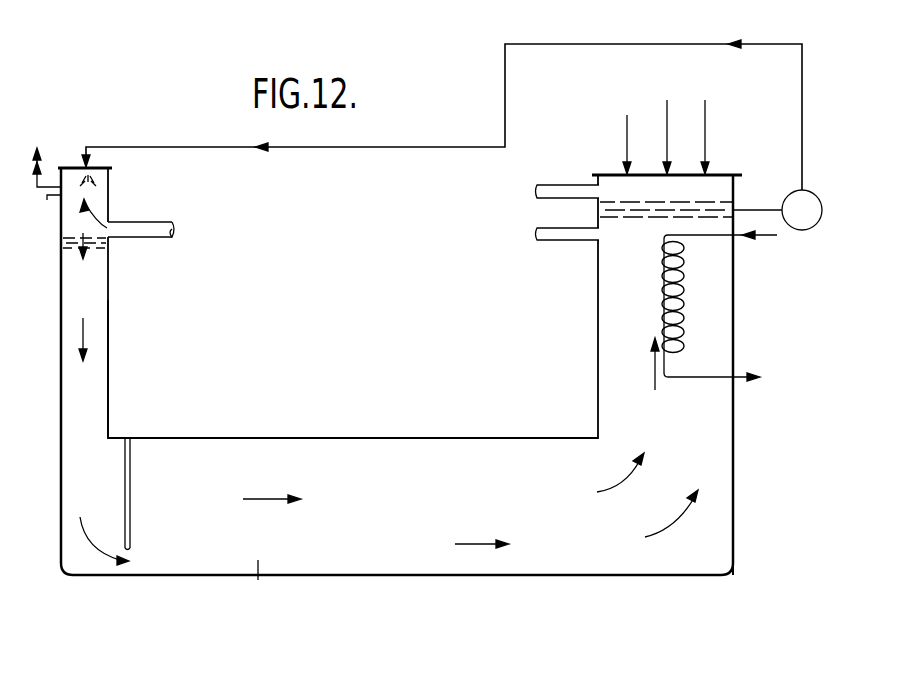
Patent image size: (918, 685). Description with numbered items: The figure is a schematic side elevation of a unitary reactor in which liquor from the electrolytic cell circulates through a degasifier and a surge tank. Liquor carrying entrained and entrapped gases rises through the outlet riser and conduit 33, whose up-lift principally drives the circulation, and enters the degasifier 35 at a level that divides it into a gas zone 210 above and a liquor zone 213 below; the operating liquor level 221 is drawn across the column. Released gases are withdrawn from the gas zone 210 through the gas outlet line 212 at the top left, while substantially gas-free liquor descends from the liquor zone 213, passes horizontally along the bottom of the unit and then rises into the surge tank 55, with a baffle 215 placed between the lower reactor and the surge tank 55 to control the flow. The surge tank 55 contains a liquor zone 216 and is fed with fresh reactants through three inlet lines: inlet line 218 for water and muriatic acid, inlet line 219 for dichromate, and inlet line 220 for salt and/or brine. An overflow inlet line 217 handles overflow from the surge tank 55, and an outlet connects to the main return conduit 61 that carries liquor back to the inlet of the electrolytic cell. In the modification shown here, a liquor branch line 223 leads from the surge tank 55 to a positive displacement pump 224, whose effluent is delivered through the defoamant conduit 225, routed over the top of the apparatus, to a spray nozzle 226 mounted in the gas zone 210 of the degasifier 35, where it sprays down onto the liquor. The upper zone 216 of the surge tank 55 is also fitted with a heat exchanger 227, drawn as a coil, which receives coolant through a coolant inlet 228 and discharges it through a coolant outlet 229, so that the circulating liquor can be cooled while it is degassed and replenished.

The surge tank 55 is at (733, 445).
The defoamant conduit 225 is at (802, 96).
The gas zone 210 is at (100, 208).
The spray nozzle 226 is at (112, 168).
The gas outlet line 212 is at (52, 181).
The liquor level 221 is at (60, 237).
The outlet riser and conduit 33 is at (158, 238).
The degasifier 35 is at (62, 318).
The liquor zone 213 is at (108, 368).
The baffle 215 is at (132, 550).
The inlet line 219 is at (672, 100).
The inlet line 218 is at (627, 120).
The inlet line 220 is at (710, 100).
The liquor zone 216 is at (716, 344).
The overflow inlet line 217 is at (565, 186).
The main return conduit 61 is at (570, 242).
The liquor branch line 223 is at (757, 205).
The positive displacement pump 224 is at (808, 232).
The coolant inlet 228 is at (742, 238).
The heat exchanger 227 is at (685, 315).
The coolant outlet 229 is at (770, 378).